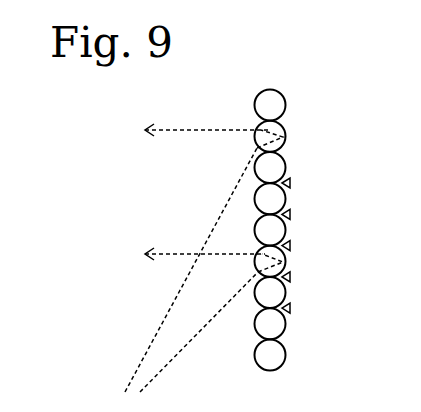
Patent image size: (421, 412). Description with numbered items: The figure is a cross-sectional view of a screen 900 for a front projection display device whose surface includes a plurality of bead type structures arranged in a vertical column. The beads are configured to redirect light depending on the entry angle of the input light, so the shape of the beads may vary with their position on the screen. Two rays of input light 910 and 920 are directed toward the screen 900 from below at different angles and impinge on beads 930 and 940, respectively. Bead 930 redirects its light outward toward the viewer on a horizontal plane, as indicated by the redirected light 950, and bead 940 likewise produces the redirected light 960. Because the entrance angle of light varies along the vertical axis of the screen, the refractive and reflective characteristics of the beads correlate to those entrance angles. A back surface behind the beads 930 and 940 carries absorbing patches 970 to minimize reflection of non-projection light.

The screen 900 is at (323, 122).
The input light 910 is at (137, 367).
The input light 920 is at (175, 356).
The bead 930 is at (286, 138).
The bead 940 is at (288, 262).
The redirected light 950 is at (172, 126).
The redirected light 960 is at (172, 250).
The absorbing patches 970 is at (292, 216).